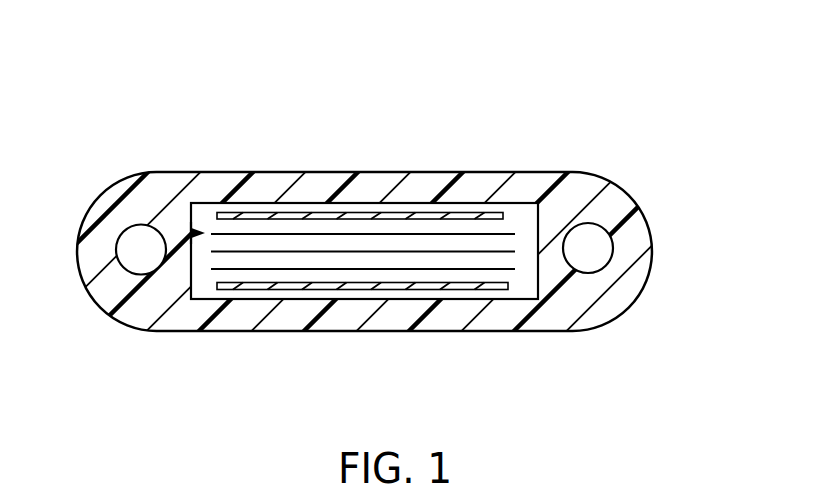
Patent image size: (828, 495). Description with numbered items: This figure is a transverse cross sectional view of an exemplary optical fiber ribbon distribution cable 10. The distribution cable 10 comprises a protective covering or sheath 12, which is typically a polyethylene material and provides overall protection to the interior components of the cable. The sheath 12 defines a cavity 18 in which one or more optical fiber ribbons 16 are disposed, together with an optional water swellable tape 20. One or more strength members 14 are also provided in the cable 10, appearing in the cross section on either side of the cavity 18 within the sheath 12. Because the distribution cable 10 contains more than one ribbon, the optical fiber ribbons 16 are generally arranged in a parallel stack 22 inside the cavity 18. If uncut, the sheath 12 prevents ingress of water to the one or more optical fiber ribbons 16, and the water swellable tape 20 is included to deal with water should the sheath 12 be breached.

The optical fiber ribbon distribution cable 10 is at (369, 219).
The sheath 12 is at (335, 171).
The strength members 14 is at (122, 230).
The optical fiber ribbons 16 is at (471, 233).
The cavity 18 is at (205, 287).
The water swellable tape 20 is at (257, 212).
The parallel stack 22 is at (192, 233).